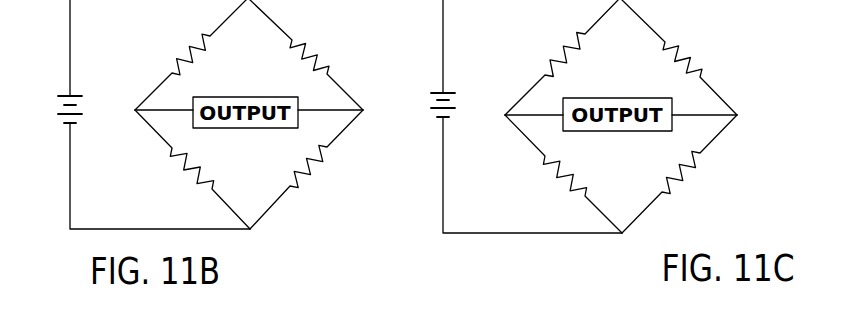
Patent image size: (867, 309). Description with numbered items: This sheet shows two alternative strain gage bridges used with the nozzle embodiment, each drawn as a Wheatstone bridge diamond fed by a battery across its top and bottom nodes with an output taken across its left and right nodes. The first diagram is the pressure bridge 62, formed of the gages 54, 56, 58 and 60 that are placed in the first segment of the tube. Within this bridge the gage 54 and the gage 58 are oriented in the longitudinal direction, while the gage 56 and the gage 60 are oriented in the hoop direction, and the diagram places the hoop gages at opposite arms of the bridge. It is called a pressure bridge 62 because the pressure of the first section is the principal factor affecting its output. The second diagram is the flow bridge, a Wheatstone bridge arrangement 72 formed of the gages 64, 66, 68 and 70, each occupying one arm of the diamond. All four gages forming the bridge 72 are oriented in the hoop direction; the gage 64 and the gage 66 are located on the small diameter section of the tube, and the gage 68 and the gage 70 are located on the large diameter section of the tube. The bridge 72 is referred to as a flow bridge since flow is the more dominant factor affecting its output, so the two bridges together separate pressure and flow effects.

In FIG. 11B, the gage 54 is at (186, 38).
In FIG. 11B, the gage 56 is at (322, 33).
In FIG. 11B, the gage 58 is at (305, 184).
In FIG. 11B, the gage 60 is at (176, 184).
In FIG. 11B, the pressure bridge 62 is at (302, 222).
In FIG. 11C, the gage 64 is at (549, 182).
In FIG. 11C, the gage 66 is at (690, 47).
In FIG. 11C, the gage 68 is at (558, 43).
In FIG. 11C, the gage 70 is at (684, 174).
In FIG. 11C, the Wheatstone bridge arrangement 72 is at (743, 139).